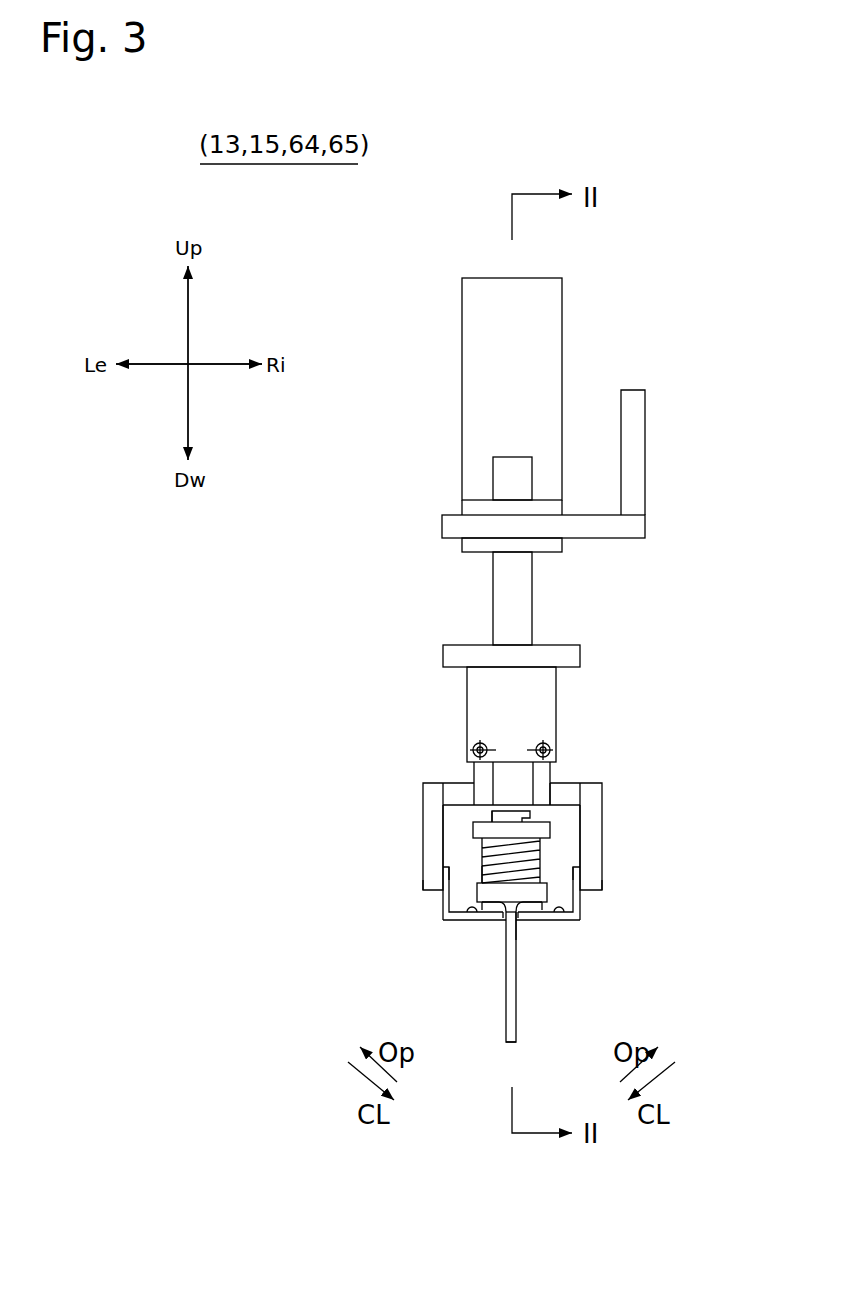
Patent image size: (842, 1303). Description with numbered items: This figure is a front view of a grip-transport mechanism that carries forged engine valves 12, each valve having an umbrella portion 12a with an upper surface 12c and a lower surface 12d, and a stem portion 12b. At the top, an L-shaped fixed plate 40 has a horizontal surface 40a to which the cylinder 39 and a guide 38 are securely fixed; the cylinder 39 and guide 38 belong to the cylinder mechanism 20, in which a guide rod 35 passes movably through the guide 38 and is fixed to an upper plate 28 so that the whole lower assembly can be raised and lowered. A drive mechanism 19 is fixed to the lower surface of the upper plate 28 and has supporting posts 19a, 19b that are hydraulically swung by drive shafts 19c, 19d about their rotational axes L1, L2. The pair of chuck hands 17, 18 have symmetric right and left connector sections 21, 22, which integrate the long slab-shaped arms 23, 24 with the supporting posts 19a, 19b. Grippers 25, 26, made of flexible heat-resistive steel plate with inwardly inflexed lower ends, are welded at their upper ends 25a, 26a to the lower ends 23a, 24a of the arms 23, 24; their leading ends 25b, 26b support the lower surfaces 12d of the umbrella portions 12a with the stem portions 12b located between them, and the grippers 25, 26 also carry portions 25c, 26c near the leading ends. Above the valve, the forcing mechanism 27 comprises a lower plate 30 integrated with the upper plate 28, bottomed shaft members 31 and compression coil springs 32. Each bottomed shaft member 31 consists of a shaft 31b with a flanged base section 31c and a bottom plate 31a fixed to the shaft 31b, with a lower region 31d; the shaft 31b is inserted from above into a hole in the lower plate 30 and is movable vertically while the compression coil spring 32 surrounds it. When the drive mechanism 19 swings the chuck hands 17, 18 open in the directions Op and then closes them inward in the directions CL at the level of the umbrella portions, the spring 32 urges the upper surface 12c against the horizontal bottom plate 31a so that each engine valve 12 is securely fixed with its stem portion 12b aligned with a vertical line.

The engine valve 12 is at (504, 1044).
The umbrella portion 12a is at (520, 913).
The stem portion 12b is at (517, 1030).
The upper surface of umbrella portion 12c is at (525, 906).
The lower surface of umbrella portion 12d is at (519, 916).
The chuck hand 17 is at (418, 800).
The chuck hand 18 is at (612, 786).
The drive mechanism 19 is at (562, 680).
The supporting post 19a is at (478, 773).
The supporting post 19b is at (548, 773).
The drive shaft 19c is at (480, 745).
The drive shaft 19d is at (545, 745).
The rotational axis L1 is at (474, 750).
The rotational axis L2 is at (550, 750).
The cylinder mechanism 20 is at (470, 266).
The connector section 21 is at (455, 793).
The connector section 22 is at (565, 792).
The arm 23 is at (420, 853).
The lower end of arm 23a is at (428, 886).
The arm 24 is at (605, 828).
The lower end of arm 24a is at (590, 883).
The gripper 25 is at (450, 921).
The upper end of gripper 25a is at (443, 868).
The leading end of gripper 25b is at (503, 930).
The left cup projection 25c is at (470, 916).
The gripper 26 is at (582, 915).
The upper end of gripper 26a is at (575, 875).
The leading end of gripper 26b is at (519, 930).
The right cup projection 26c is at (560, 916).
The forcing mechanism 27 is at (470, 883).
The upper plate 28 is at (443, 657).
The lower plate 30 is at (532, 816).
The bottomed shaft member 31 is at (475, 895).
The bottom plate 31a is at (495, 912).
The shaft 31b is at (482, 874).
The flanged base section 31c is at (492, 813).
The pressing member right lower portion 31d is at (524, 908).
The compression coil spring 32 is at (551, 833).
The guide rod 35 is at (530, 600).
The guide 38 is at (470, 545).
The cylinder 39 is at (470, 310).
The fixed plate 40 is at (650, 401).
The horizontal surface of fixed plate 40a is at (444, 524).